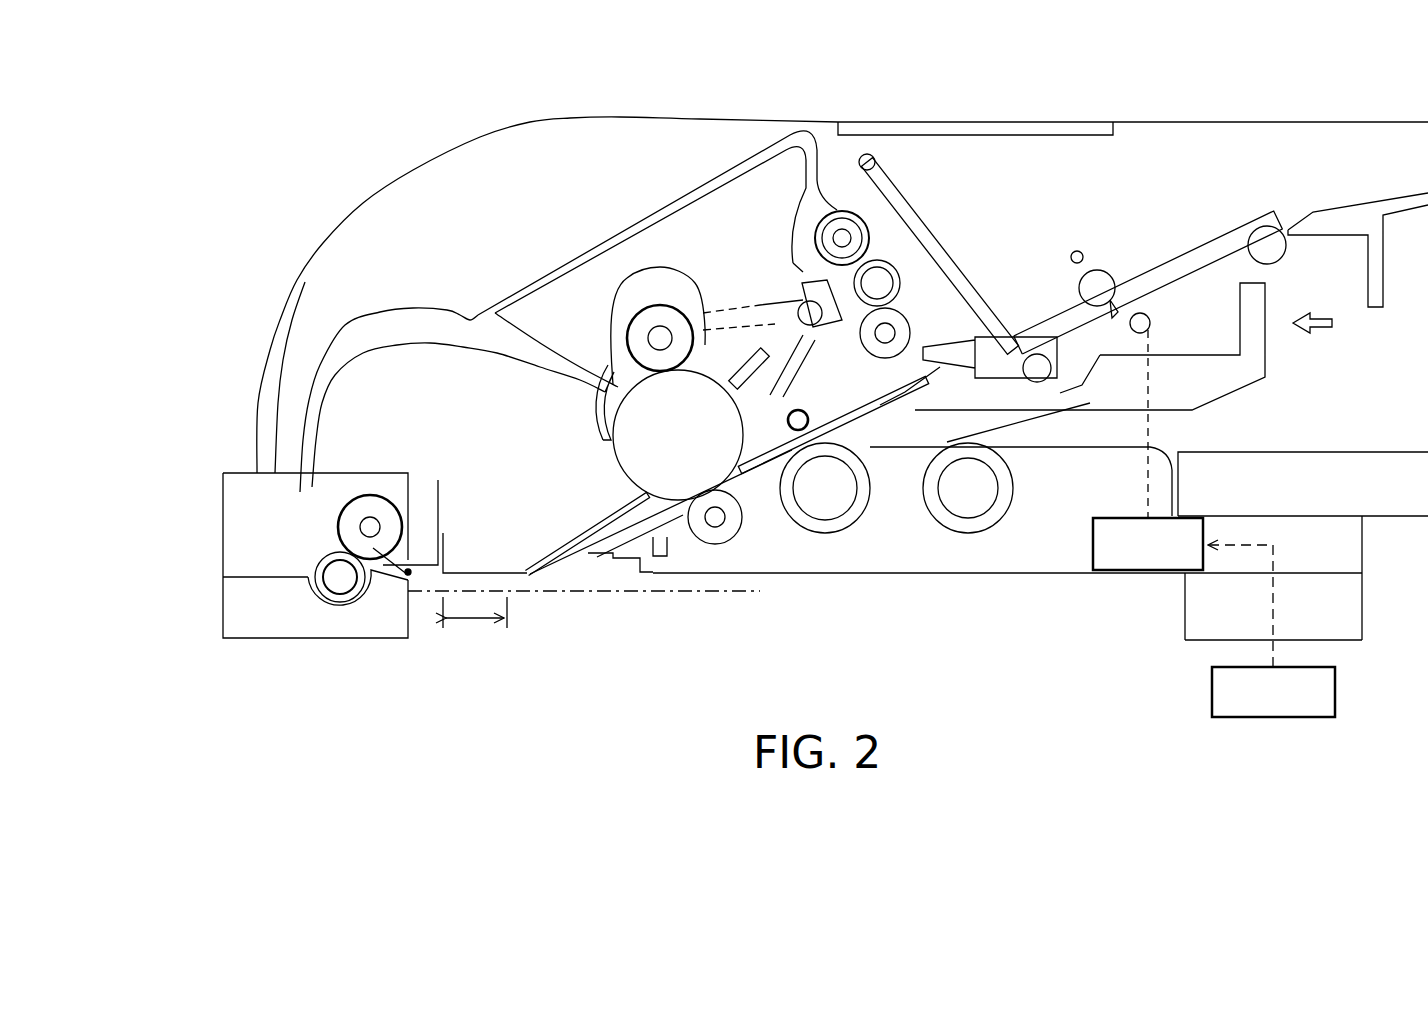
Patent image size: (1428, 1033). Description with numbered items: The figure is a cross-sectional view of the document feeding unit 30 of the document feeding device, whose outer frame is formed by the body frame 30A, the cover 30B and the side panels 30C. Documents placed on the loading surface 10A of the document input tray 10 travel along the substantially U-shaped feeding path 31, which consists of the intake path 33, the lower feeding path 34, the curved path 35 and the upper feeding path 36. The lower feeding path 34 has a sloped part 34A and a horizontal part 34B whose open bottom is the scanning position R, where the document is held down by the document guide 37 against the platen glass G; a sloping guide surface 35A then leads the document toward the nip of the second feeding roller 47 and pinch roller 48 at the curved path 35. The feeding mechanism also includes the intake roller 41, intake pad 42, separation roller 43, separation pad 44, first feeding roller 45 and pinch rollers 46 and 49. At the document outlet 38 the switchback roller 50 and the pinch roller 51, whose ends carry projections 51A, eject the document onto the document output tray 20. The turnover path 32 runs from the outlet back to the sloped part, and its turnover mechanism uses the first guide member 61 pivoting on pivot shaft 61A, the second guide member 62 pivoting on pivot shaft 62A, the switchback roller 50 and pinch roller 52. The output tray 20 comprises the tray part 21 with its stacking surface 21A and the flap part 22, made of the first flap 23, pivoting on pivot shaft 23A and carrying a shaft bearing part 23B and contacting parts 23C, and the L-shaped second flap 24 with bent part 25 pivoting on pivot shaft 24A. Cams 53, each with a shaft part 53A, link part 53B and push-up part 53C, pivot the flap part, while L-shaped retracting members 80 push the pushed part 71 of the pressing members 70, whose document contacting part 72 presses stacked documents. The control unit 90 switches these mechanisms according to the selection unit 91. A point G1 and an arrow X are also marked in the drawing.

The document input tray 10 is at (1362, 442).
The loading surface 10A is at (1308, 451).
The document output tray 20 is at (1293, 78).
The tray part 21 is at (1315, 190).
The stacking surface 21A is at (1368, 210).
The flap part 22 is at (1222, 215).
The first flap 23 is at (1198, 257).
The pivot shaft 23A is at (1280, 252).
The shaft bearing part 23B is at (1085, 380).
The contacting parts 23C is at (1192, 268).
The second flap 24 is at (965, 337).
The pivot shaft 24A is at (1050, 422).
The bent part 25 is at (1040, 353).
The document feeding unit 30 is at (268, 165).
The body frame 30A is at (215, 490).
The cover 30B is at (283, 336).
The side panels 30C is at (1372, 121).
The feeding path 31 is at (347, 322).
The turnover path 32 is at (882, 413).
The intake path 33 is at (1188, 428).
The lower feeding path 34 is at (505, 685).
The sloped part 34A is at (583, 582).
The horizontal part 34B is at (527, 585).
The curved path 35 is at (296, 412).
The guide surface 35A is at (392, 567).
The upper feeding path 36 is at (538, 350).
The document guide 37 is at (600, 545).
The document outlet 38 is at (892, 247).
The intake roller 41 is at (985, 532).
The intake pad 42 is at (993, 520).
The separation roller 43 is at (835, 525).
The separation pad 44 is at (897, 408).
The first feeding roller 45 is at (678, 468).
The pinch roller 46 is at (725, 533).
The second feeding roller 47 is at (365, 497).
The pinch roller 48 is at (335, 600).
The pinch roller 49 is at (661, 322).
The switchback roller 50 is at (902, 290).
The pinch roller 51 is at (842, 212).
The projections 51A is at (840, 215).
The pinch roller 52 is at (912, 331).
The cams 53 is at (1097, 268).
The shaft part 53A is at (1073, 254).
The link part 53B is at (1113, 296).
The push-up part 53C is at (1150, 324).
The first guide member 61 is at (798, 305).
The pivot shaft 61A is at (837, 210).
The second guide member 62 is at (756, 478).
The pivot shaft 62A is at (803, 410).
The pressing members 70 is at (896, 195).
The pushed part 71 is at (1018, 340).
The document contacting part 72 is at (1000, 332).
The retracting members 80 is at (968, 383).
The control unit 90 is at (1137, 572).
The selection unit 91 is at (1338, 695).
The platen glass G is at (650, 595).
The gap point G1 is at (409, 568).
The scanning position R is at (475, 623).
The direction X is at (1323, 323).